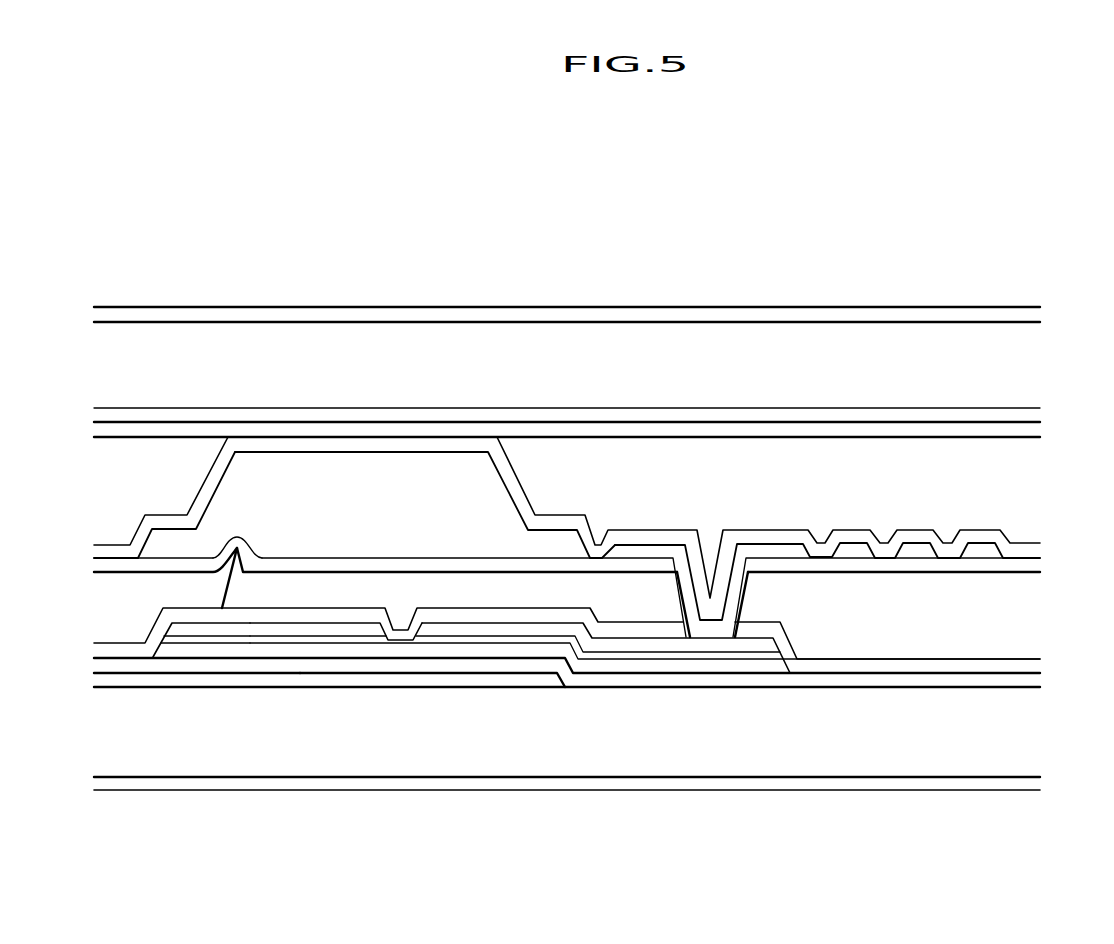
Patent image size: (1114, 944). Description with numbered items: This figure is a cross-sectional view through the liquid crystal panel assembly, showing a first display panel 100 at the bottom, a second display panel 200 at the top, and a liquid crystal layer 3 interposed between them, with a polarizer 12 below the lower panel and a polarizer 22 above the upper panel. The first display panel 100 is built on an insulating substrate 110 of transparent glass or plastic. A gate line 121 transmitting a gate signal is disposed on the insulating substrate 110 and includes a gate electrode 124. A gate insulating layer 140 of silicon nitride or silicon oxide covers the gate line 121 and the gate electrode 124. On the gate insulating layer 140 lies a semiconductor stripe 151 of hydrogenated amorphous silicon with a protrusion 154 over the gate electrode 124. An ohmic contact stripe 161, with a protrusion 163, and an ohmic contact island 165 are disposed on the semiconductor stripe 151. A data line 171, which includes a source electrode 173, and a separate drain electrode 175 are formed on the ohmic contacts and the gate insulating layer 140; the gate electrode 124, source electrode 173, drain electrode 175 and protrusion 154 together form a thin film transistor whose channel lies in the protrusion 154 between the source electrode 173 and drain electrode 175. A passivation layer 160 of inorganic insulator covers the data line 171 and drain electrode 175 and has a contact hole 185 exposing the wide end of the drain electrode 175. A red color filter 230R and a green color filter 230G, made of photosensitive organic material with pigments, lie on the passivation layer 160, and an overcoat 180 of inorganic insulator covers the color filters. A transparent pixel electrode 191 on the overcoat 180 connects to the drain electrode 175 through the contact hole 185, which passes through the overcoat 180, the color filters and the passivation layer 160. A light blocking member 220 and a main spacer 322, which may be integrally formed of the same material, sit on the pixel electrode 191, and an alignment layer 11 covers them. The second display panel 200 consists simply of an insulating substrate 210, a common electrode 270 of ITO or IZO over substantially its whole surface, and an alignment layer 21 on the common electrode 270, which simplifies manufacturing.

The polarizer 22 is at (1028, 316).
The second display panel 200 is at (1046, 323).
The insulating substrate 210 is at (628, 345).
The common electrode 270 is at (720, 415).
The alignment layer 21 is at (975, 432).
The liquid crystal layer 3 is at (1046, 441).
The first display panel 100 is at (1046, 775).
The alignment layer 11 is at (656, 538).
The light blocking member 220 is at (165, 540).
The main spacer 322 is at (340, 478).
The pixel electrode 191 is at (775, 548).
The overcoat 180 is at (877, 563).
The red color filter 230R is at (130, 612).
The green color filter 230G is at (550, 585).
The contact hole 185 is at (690, 632).
The passivation layer 160 is at (285, 613).
The data line 171 is at (227, 630).
The source electrode 173 is at (320, 630).
The drain electrode 175 is at (540, 630).
The ohmic contact stripe 161 is at (203, 642).
The protrusion 163 is at (360, 638).
The ohmic contact island 165 is at (508, 640).
The semiconductor stripe 151 is at (175, 650).
The protrusion 154 is at (478, 652).
The gate insulating layer 140 is at (638, 680).
The gate line 121 is at (183, 680).
The gate electrode 124 is at (420, 680).
The insulating substrate 110 is at (780, 755).
The polarizer 12 is at (1030, 783).